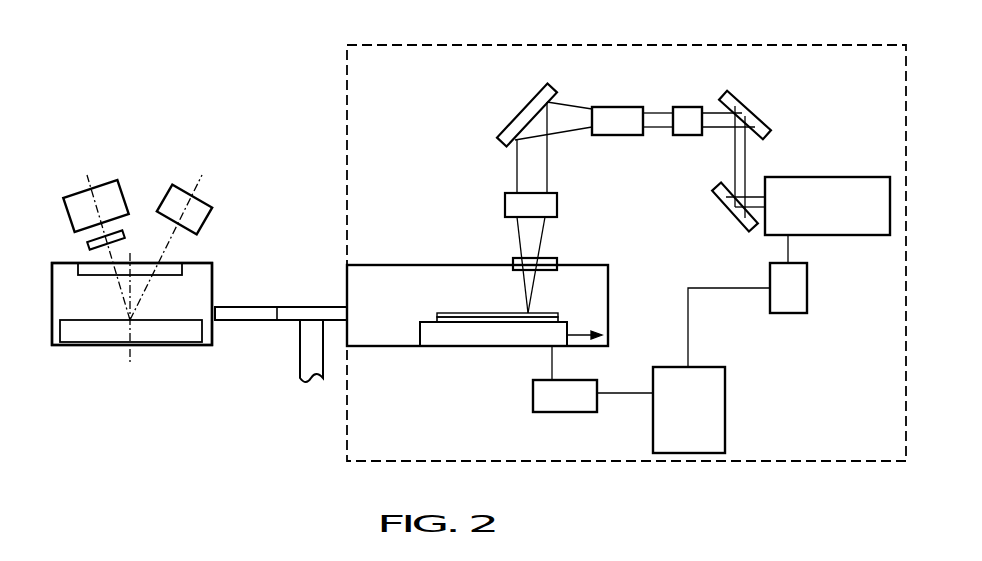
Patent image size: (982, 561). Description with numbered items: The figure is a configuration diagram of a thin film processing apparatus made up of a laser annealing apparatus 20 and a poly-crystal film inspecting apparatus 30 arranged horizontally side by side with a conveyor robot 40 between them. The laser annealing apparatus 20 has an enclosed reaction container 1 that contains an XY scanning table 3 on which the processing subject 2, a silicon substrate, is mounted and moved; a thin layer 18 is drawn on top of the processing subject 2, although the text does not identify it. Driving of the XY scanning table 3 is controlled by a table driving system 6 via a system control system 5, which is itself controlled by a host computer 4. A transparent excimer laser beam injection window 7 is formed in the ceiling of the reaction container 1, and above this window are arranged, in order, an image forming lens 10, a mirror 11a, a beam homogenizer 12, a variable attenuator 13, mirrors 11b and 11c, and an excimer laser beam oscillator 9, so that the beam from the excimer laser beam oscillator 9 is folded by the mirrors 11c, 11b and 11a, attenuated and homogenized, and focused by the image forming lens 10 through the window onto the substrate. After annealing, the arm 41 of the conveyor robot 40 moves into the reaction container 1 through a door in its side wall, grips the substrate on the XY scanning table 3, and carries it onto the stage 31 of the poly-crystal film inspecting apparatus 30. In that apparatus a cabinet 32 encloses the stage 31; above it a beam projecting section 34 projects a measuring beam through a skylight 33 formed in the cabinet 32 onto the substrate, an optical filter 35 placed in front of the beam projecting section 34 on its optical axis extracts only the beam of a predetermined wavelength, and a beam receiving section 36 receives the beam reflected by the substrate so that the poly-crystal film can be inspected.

The reaction container 1 is at (608, 280).
The processing subject 2 is at (558, 314).
The XY scanning table 3 is at (447, 340).
The host computer 4 is at (807, 289).
The system control system 5 is at (725, 414).
The table driving system 6 is at (580, 380).
The excimer laser beam injection window 7 is at (550, 258).
The excimer laser beam oscillator 9 is at (815, 177).
The image forming lens 10 is at (557, 202).
The mirror 11a is at (520, 102).
The mirror 11b is at (752, 108).
The mirror 11c is at (727, 214).
The beam homogenizer 12 is at (614, 107).
The variable attenuator 13 is at (690, 107).
The thin film layer on substrate 18 is at (437, 316).
The laser annealing apparatus 20 is at (346, 82).
The poly-crystal film inspecting apparatus 30 is at (83, 347).
The stage 31 is at (108, 339).
The cabinet 32 is at (197, 263).
The skylight 33 is at (83, 263).
The beam projecting section 34 is at (103, 180).
The optical filter 35 is at (130, 232).
The beam receiving section 36 is at (203, 200).
The conveyor robot 40 is at (300, 368).
The arm 41 is at (247, 307).